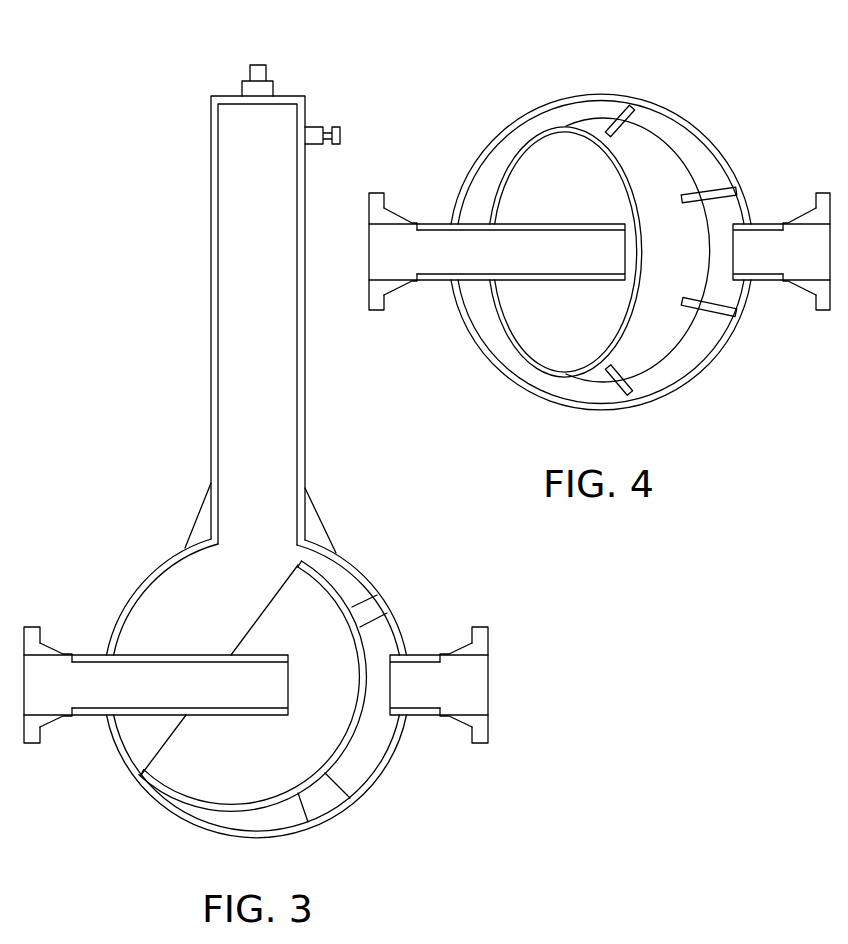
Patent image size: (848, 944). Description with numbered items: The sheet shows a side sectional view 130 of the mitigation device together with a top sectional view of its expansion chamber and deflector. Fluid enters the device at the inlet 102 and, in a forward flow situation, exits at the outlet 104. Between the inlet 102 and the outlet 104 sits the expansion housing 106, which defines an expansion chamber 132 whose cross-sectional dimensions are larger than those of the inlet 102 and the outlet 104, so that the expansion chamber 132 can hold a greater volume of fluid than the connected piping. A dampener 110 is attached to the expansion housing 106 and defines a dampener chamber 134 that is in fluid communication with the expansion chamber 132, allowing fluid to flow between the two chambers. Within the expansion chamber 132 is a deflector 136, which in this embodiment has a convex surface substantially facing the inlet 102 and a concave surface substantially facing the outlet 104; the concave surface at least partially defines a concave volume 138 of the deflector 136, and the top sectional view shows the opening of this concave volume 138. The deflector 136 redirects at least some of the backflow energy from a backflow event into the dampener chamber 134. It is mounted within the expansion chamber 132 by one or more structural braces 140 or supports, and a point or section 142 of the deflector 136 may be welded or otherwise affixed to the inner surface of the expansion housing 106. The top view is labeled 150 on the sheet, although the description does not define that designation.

In FIG. 3, the inlet 102 is at (425, 655).
In FIG. 4, the inlet 102 is at (765, 222).
In FIG. 3, the outlet 104 is at (88, 655).
In FIG. 4, the outlet 104 is at (432, 220).
In FIG. 3, the expansion housing 106 is at (162, 557).
In FIG. 4, the expansion housing 106 is at (692, 122).
In FIG. 3, the dampener 110 is at (211, 243).
In FIG. 3, the side sectional view 130 is at (142, 72).
In FIG. 3, the expansion chamber 132 is at (162, 601).
In FIG. 4, the expansion chamber 132 is at (483, 178).
In FIG. 3, the dampener chamber 134 is at (237, 325).
In FIG. 3, the deflector 136 is at (353, 738).
In FIG. 4, the deflector 136 is at (653, 328).
In FIG. 3, the concave volume 138 is at (171, 757).
In FIG. 4, the concave volume 138 is at (570, 343).
In FIG. 3, the structural braces 140 is at (368, 610).
In FIG. 4, the structural braces 140 is at (630, 380).
In FIG. 3, the point or section 142 is at (143, 775).
In FIG. 4, the valve assembly (sectional view) 150 is at (545, 40).